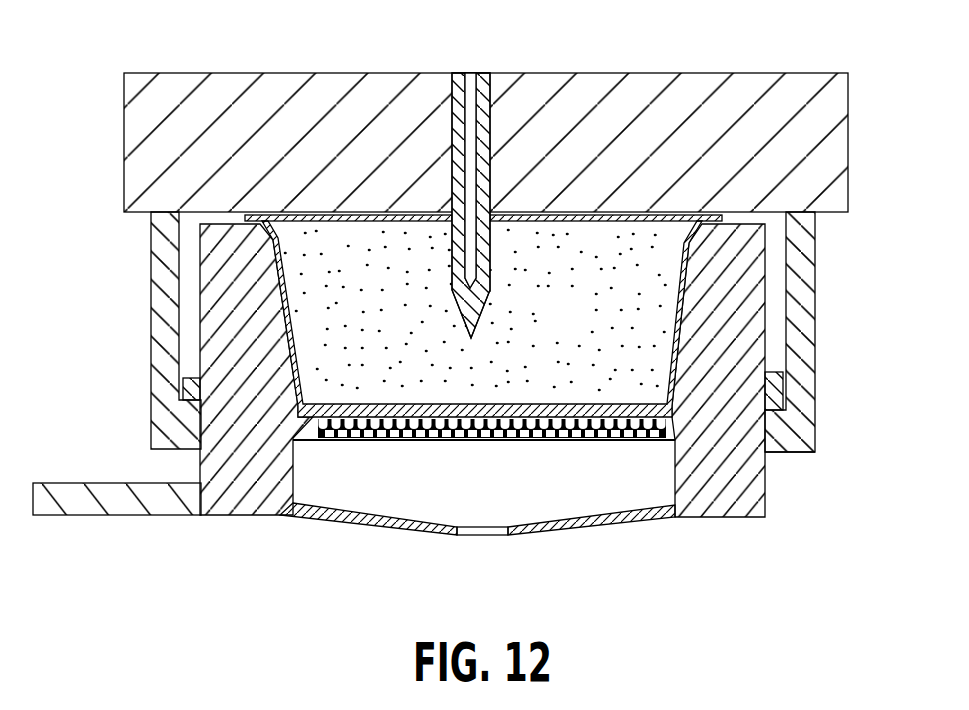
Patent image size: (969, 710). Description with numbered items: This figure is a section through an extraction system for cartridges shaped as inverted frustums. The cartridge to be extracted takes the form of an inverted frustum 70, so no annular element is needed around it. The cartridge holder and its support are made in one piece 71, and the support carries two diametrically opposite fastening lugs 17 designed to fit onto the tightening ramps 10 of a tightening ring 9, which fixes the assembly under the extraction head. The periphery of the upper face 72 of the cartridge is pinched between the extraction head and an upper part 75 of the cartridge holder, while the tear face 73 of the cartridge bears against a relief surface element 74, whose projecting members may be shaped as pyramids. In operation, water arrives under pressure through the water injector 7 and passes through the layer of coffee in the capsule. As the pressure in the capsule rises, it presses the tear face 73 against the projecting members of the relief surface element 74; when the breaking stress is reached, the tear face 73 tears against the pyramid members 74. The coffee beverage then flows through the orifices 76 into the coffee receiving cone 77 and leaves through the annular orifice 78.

The water injector 7 is at (488, 72).
The tightening ring 9 is at (798, 330).
The tightening ramps 10 is at (788, 452).
The fastening lugs 17 is at (188, 393).
The inverted frustum cartridge 70 is at (546, 331).
The one-piece cartridge holder and support 71 is at (117, 494).
The upper face of the cartridge 72 is at (612, 213).
The tear face 73 is at (462, 440).
The relief surface element 74 is at (548, 440).
The upper part of the cartridge holder 75 is at (763, 240).
The orifices 76 is at (400, 440).
The coffee receiving cone 77 is at (604, 524).
The annular orifice 78 is at (462, 535).